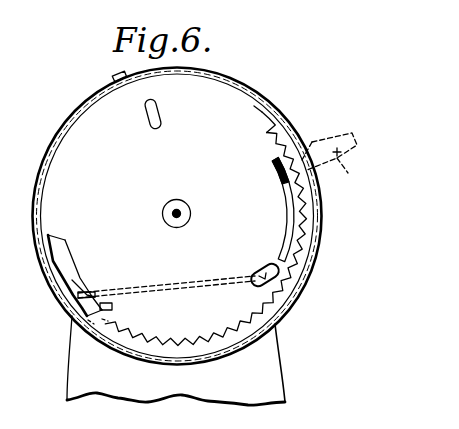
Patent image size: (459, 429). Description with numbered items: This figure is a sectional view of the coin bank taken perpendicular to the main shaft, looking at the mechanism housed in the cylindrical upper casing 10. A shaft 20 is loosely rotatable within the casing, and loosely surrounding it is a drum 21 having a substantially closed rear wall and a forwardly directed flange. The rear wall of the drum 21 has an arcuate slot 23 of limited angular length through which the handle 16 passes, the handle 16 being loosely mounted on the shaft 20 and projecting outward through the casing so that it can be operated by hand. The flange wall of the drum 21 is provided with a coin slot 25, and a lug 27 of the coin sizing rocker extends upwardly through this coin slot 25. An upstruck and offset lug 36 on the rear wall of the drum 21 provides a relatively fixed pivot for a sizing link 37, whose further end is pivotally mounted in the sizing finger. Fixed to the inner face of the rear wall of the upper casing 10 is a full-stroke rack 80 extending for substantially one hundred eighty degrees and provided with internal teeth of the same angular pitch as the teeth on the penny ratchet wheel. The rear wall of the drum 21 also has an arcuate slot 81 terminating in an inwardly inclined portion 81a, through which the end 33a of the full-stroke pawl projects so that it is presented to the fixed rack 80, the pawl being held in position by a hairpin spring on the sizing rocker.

The upper casing 10 is at (55, 136).
The handle 16 is at (292, 181).
The shaft 20 is at (177, 213).
The drum 21 is at (229, 93).
The arcuate slot 23 is at (283, 233).
The coin slot 25 is at (283, 233).
The lug 27 is at (112, 74).
The end of full-stroke pawl 33a is at (72, 316).
The upstruck and offset lug 36 is at (267, 277).
The sizing link 37 is at (199, 279).
The full-stroke rack 80 is at (296, 270).
The arcuate slot 81 is at (64, 253).
The inwardly inclined portion 81a is at (112, 305).